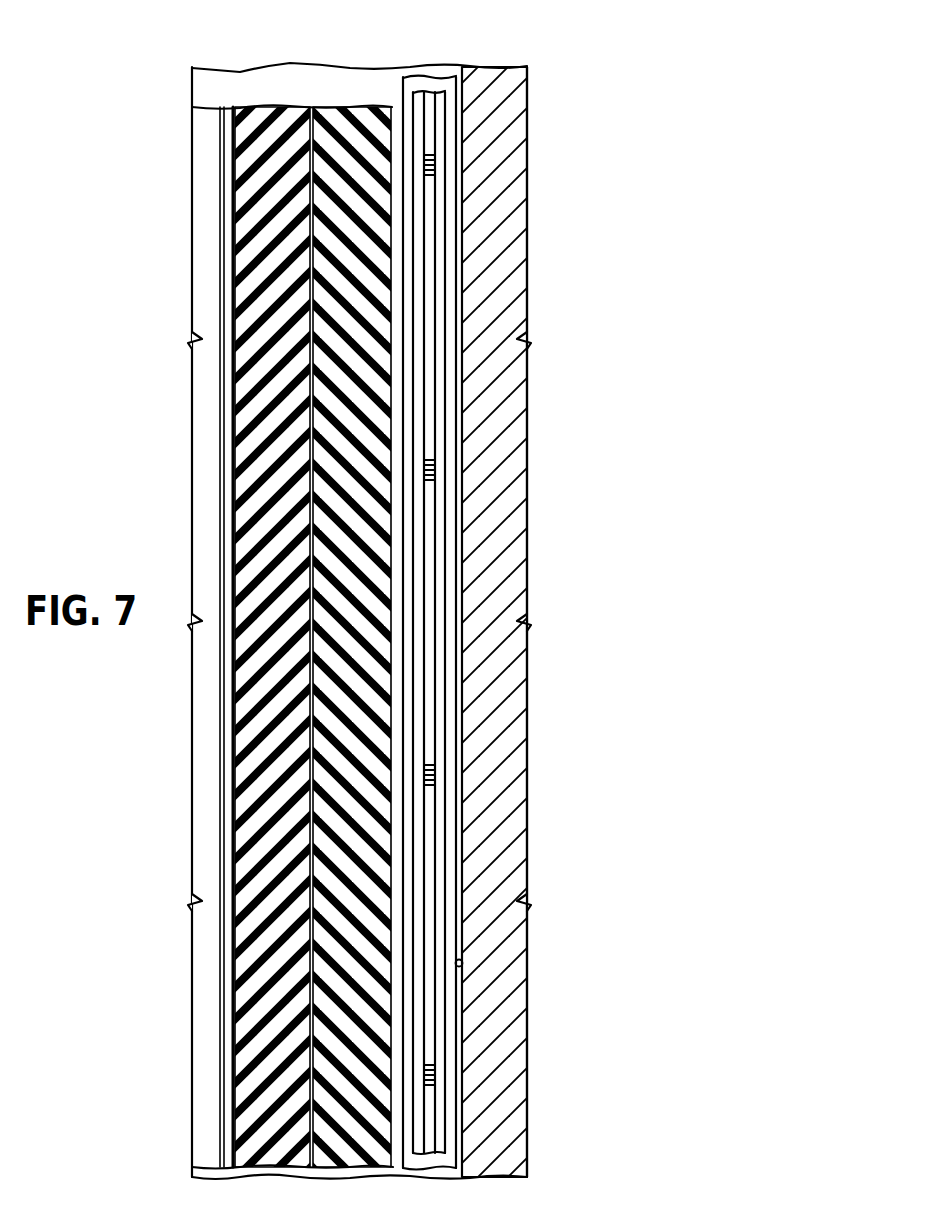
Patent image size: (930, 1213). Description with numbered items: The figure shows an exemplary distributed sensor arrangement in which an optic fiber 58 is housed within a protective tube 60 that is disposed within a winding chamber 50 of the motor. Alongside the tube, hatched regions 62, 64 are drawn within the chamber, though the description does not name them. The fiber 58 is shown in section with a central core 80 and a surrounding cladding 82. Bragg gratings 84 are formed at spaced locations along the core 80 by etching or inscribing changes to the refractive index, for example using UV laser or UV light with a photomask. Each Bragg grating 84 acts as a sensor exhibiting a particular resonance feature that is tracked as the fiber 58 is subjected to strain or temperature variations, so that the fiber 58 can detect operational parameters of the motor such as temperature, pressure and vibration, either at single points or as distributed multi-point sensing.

The winding chamber 50 is at (462, 961).
The optic fiber 58 is at (458, 122).
The protective tube 60 is at (460, 880).
The first layer 62 is at (272, 130).
The second layer 64 is at (350, 128).
The core 80 is at (437, 365).
The cladding 82 is at (443, 260).
The Bragg gratings 84 is at (430, 165).